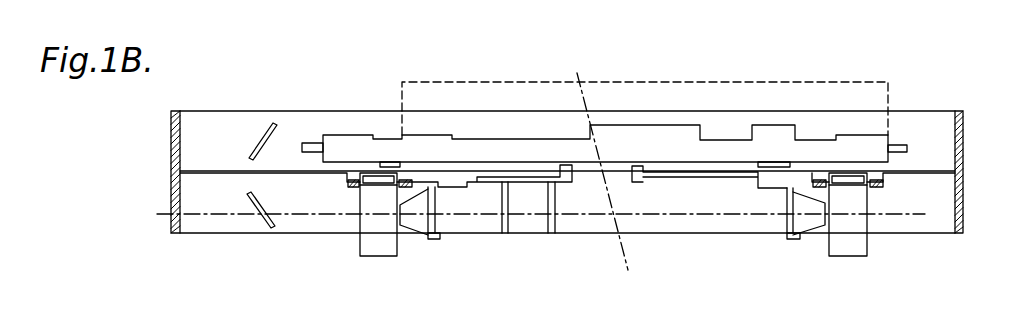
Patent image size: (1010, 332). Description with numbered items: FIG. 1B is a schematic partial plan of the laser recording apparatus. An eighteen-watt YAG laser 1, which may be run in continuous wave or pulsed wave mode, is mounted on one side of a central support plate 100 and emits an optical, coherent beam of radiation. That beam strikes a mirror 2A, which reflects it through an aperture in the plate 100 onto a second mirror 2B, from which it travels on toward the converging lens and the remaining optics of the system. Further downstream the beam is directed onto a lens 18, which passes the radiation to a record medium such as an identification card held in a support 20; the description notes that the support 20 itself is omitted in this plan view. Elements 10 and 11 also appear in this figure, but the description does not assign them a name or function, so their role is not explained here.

The YAG laser 1 is at (657, 135).
The mirror 2A is at (260, 133).
The mirror 2B is at (251, 211).
The left support column 10 is at (355, 240).
The right support column 11 is at (860, 258).
The lens 18 is at (415, 227).
The support 20 is at (626, 248).
The central support plate 100 is at (935, 170).